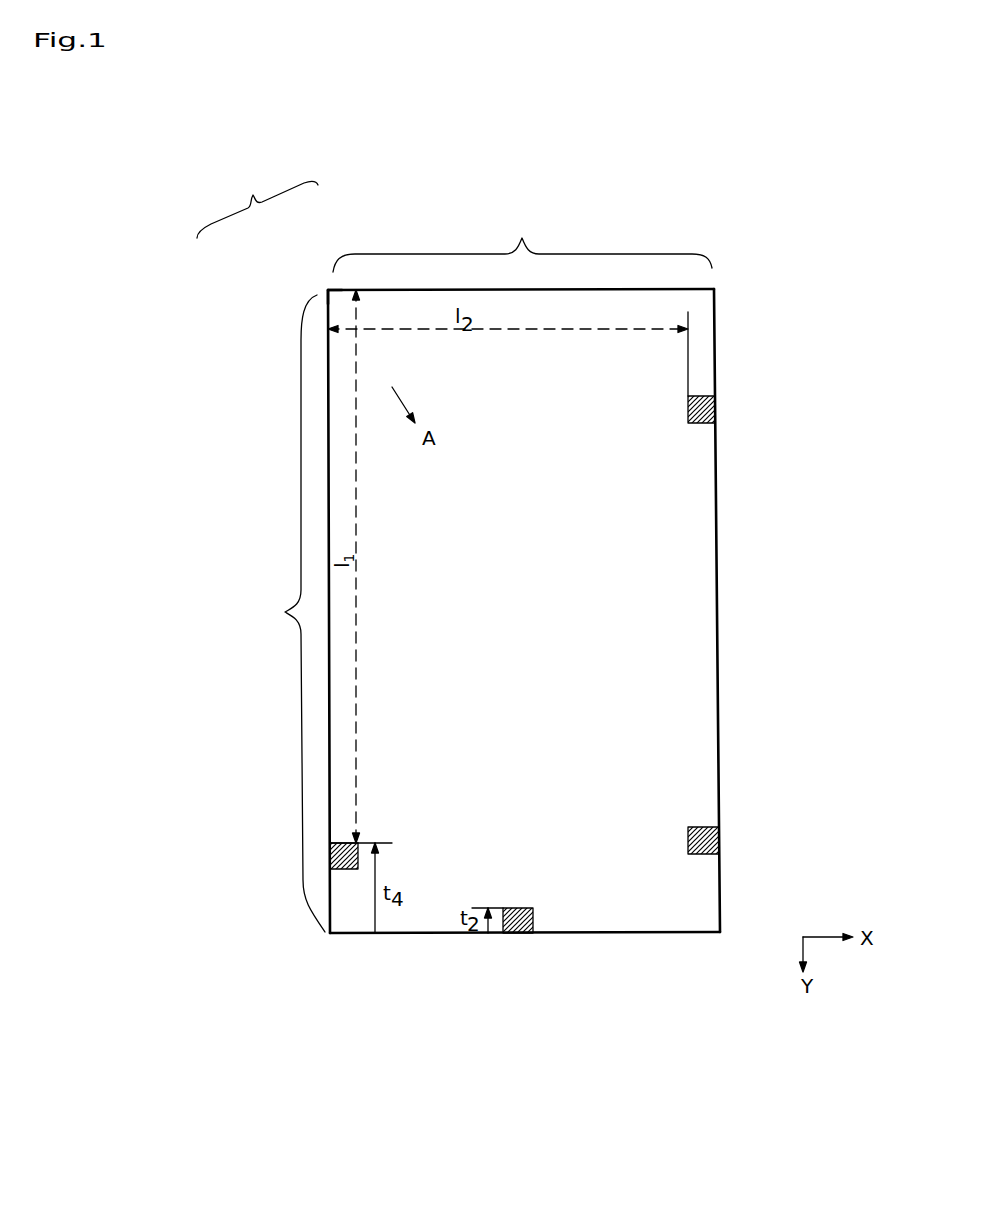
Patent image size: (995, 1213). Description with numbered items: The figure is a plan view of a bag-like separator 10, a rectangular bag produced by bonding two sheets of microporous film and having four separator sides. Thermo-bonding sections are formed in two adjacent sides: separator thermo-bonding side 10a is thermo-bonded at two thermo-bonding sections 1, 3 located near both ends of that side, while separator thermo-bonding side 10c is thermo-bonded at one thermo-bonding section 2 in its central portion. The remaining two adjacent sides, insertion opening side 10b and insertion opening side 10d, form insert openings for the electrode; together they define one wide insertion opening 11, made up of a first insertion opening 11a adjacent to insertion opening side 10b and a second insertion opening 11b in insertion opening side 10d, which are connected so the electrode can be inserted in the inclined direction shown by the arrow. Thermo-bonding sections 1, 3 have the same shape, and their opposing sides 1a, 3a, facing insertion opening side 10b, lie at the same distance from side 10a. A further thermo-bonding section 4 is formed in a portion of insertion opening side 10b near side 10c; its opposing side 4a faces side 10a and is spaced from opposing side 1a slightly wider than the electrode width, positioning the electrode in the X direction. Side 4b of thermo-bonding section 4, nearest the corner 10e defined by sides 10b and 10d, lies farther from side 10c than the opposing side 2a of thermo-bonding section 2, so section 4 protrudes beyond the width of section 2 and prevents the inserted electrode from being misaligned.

The bag-like separator 10 is at (539, 679).
The separator thermo-bonding side 10a is at (717, 578).
The insertion opening side 10b is at (332, 610).
The separator thermo-bonding side 10c is at (463, 935).
The insertion opening side 10d is at (632, 290).
The corner 10e is at (328, 290).
The insertion opening 11 is at (454, 550).
The first insertion opening 11a is at (285, 612).
The second insertion opening 11b is at (522, 240).
The thermo-bonding section 1 is at (735, 826).
The opposing side 1a is at (688, 835).
The thermo-bonding section 2 is at (555, 960).
The opposing side 2a is at (522, 907).
The thermo-bonding section 3 is at (738, 382).
The opposing side 3a is at (688, 410).
The thermo-bonding section 4 is at (352, 830).
The opposing side 4a is at (357, 862).
The side 4b is at (352, 840).